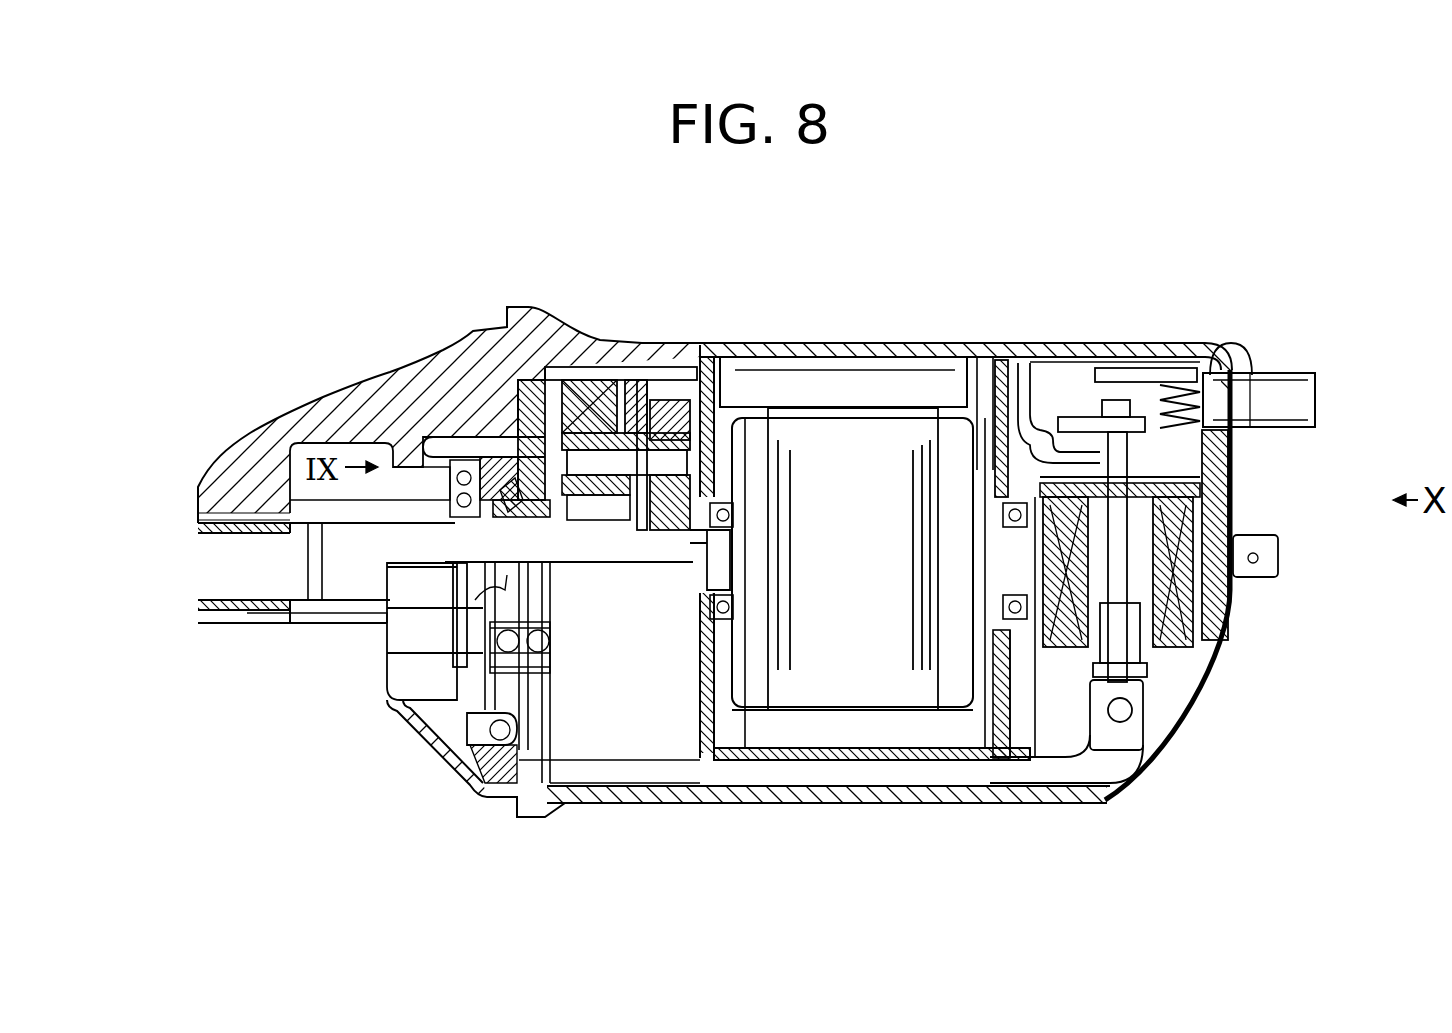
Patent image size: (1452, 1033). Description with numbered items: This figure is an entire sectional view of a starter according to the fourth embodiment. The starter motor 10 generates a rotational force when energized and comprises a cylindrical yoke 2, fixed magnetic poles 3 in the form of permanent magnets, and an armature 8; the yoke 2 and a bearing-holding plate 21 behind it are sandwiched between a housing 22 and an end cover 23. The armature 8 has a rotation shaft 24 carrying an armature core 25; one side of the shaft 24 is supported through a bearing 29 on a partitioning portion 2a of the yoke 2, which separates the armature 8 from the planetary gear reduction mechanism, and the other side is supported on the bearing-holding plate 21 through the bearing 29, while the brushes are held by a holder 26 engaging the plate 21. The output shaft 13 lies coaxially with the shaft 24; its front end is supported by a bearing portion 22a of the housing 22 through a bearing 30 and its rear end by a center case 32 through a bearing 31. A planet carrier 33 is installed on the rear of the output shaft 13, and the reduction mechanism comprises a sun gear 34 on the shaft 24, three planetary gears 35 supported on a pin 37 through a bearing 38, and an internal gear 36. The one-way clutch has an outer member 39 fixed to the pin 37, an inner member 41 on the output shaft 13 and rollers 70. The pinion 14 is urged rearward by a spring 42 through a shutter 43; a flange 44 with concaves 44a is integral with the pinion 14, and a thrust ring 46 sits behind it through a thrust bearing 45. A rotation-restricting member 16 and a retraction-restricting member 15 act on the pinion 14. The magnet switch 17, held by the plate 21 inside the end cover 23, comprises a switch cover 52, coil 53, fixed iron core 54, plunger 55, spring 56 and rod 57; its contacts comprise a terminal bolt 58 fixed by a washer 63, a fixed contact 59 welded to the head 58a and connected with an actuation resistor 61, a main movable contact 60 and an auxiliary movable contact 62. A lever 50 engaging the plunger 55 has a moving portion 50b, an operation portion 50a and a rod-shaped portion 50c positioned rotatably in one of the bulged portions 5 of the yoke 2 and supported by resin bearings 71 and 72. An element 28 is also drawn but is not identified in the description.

The yoke 2 is at (892, 347).
The partitioning portion 2a is at (718, 352).
The fixed magnetic poles 3 is at (845, 385).
The bulged portions 5 is at (843, 805).
The armature 8 is at (878, 712).
The starter motor 10 is at (915, 340).
The output shaft 13 is at (215, 565).
The pinion 14 is at (400, 635).
The retraction-restricting member 15 is at (530, 400).
The rotation-restricting member 16 is at (437, 437).
The magnet switch 17 is at (1213, 507).
The bearing-holding plate 21 is at (1003, 358).
The housing 22 is at (245, 436).
The bearing portion 22a is at (230, 467).
The end cover 23 is at (1100, 810).
The rotation shaft 24 is at (693, 583).
The armature core 25 is at (810, 695).
The holder 26 is at (1016, 355).
The bearing holder 28 is at (740, 618).
The bearing 29 is at (1003, 625).
The bearing 30 is at (224, 498).
The bearing 31 is at (560, 366).
The center case 32 is at (568, 380).
The planet carrier 33 is at (612, 380).
The sun gear 34 is at (655, 852).
The planetary gears 35 is at (682, 400).
The internal gear 36 is at (655, 436).
The pin 37 is at (570, 545).
The bearing 38 is at (587, 515).
The outer member 39 is at (660, 400).
The inner member 41 is at (483, 797).
The spring 42 is at (274, 482).
The shutter 43 is at (280, 628).
The flange 44 is at (453, 655).
The concaves 44a is at (453, 460).
The thrust bearing 45 is at (395, 455).
The thrust ring 46 is at (510, 485).
The lever 50 is at (945, 775).
The operation portion 50a is at (457, 632).
The moving portion 50b is at (1140, 740).
The rod-shaped portion 50c is at (843, 770).
The switch cover 52 is at (1175, 668).
The coil 53 is at (1185, 625).
The fixed iron core 54 is at (1230, 490).
The plunger 55 is at (1160, 712).
The spring 56 is at (1195, 590).
The rod 57 is at (1275, 538).
The terminal bolt 58 is at (1293, 373).
The head 58a is at (1215, 365).
The fixed contact 59 is at (1170, 385).
The main movable contact 60 is at (1078, 417).
The actuation resistor 61 is at (1180, 350).
The auxiliary movable contact 62 is at (1235, 460).
The washer 63 is at (1247, 363).
The rollers 70 is at (512, 800).
The bearing 71 is at (612, 498).
The bearing 72 is at (1005, 790).